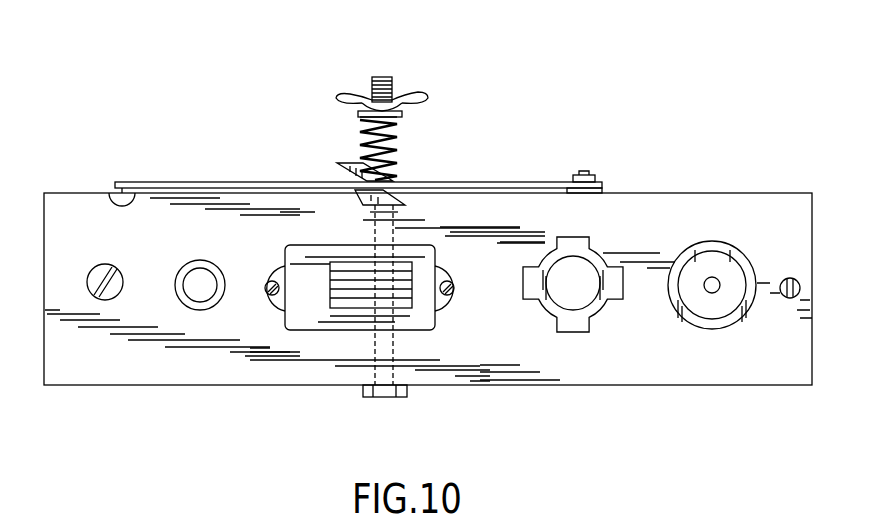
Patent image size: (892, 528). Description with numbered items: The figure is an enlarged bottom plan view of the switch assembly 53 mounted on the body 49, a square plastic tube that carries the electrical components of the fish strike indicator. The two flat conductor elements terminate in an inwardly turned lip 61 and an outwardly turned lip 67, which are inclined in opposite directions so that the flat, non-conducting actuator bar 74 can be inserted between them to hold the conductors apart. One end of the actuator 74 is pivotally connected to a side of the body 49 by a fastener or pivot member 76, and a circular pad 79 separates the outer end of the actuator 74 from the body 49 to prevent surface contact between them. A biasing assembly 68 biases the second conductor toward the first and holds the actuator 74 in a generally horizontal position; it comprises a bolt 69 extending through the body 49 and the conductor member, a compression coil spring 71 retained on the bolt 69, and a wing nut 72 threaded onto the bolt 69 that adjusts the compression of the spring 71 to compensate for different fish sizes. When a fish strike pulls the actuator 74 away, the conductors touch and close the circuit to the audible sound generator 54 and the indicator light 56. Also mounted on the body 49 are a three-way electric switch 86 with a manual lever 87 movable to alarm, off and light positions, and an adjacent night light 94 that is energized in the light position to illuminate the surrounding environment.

The body 49 is at (95, 368).
The switch assembly 53 is at (492, 125).
The audible sound generator 54 is at (302, 318).
The indicator light 56 is at (200, 280).
The inwardly turned lip 61 is at (367, 202).
The outwardly turned lip 67 is at (342, 163).
The biasing assembly 68 is at (348, 74).
The bolt 69 is at (393, 398).
The compression coil spring 71 is at (363, 135).
The wing nut 72 is at (416, 96).
The actuator bar 74 is at (491, 182).
The pivot member 76 is at (591, 172).
The circular pad 79 is at (112, 196).
The three-way electric switch 86 is at (707, 248).
The manual lever 87 is at (718, 278).
The night light 94 is at (573, 283).